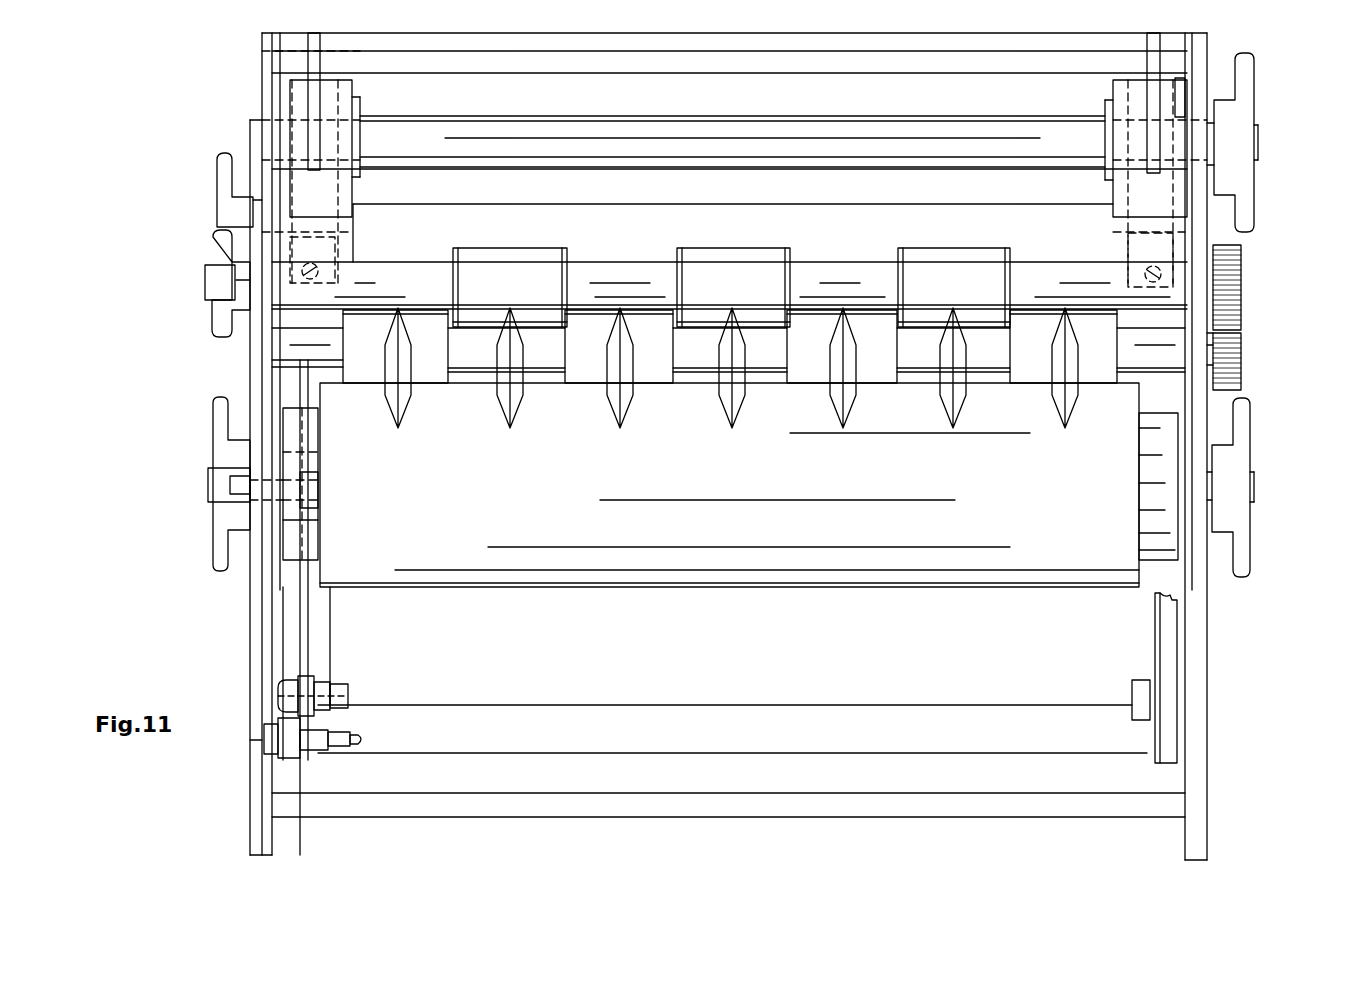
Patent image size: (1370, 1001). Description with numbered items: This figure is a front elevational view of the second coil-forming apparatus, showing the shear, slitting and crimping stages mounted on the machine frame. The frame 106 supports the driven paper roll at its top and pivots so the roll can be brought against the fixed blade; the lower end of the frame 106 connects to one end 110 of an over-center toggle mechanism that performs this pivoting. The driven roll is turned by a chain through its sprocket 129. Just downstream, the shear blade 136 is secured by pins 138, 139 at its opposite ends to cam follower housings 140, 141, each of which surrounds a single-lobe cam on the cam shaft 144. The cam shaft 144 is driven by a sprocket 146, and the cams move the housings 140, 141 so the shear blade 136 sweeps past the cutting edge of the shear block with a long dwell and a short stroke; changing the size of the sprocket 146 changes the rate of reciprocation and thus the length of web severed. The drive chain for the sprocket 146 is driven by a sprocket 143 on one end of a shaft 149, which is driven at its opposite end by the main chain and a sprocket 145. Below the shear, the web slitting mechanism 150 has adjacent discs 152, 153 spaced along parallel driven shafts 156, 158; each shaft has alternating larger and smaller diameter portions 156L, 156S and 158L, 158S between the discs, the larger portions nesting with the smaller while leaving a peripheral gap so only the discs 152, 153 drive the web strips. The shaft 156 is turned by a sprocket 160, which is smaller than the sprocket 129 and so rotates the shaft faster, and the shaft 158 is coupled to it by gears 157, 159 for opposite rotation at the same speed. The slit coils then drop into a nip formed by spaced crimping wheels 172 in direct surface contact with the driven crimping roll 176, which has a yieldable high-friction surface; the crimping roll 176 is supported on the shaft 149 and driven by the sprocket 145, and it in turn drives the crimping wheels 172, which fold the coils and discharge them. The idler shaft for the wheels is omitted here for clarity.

The frame 106 is at (318, 629).
The end of over-center toggle mechanism 110 is at (318, 691).
The sprocket 129 is at (220, 181).
The shear blade 136 is at (690, 224).
The pin 138 is at (318, 268).
The pin 139 is at (1145, 270).
The cam follower housing 140 is at (345, 197).
The cam follower housing 141 is at (1113, 200).
The sprocket 143 is at (1245, 556).
The cam shaft 144 is at (735, 130).
The sprocket 145 is at (218, 439).
The sprocket 146 is at (1245, 195).
The shaft 149 is at (210, 498).
The web slitting mechanism 150 is at (730, 245).
The disc 152 is at (572, 252).
The disc 153 is at (562, 378).
The driven shaft 156 is at (418, 263).
The larger diameter portion 156L is at (498, 265).
The smaller diameter portion 156S is at (843, 262).
The gear 157 is at (1241, 378).
The driven shaft 158 is at (315, 350).
The larger diameter portion 158L is at (650, 375).
The smaller diameter portion 158S is at (765, 372).
The gear 159 is at (1241, 268).
The sprocket 160 is at (222, 319).
The crimping wheels 172 is at (505, 398).
The crimping roll 176 is at (749, 485).